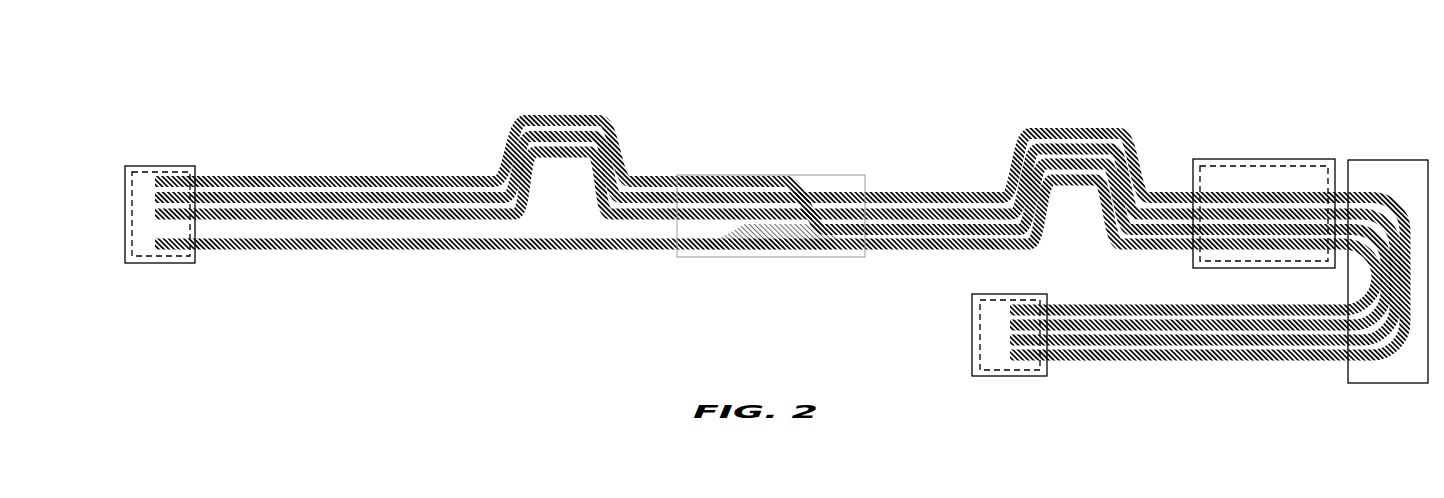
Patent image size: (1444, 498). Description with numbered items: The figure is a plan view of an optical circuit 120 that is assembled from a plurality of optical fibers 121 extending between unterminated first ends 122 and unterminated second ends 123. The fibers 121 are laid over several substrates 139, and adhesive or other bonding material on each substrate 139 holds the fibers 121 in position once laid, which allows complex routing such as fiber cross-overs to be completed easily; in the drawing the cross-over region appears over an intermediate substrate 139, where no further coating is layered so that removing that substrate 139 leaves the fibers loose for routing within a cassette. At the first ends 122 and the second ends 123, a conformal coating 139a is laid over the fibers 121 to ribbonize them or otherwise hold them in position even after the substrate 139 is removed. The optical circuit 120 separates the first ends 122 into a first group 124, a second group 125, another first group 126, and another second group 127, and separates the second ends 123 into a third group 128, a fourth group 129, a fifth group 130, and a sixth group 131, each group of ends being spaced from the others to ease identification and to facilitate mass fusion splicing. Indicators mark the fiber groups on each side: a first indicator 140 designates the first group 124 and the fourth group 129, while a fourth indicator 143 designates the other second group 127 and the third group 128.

The optical circuit 120 is at (776, 160).
The optical fibers 121 is at (1070, 128).
The first ends 122 is at (1008, 327).
The second ends 123 is at (157, 243).
The first group 124 is at (1010, 357).
The second group 125 is at (1010, 322).
The another first group 126 is at (1010, 340).
The another second group 127 is at (1010, 305).
The third group 128 is at (157, 243).
The fourth group 129 is at (157, 181).
The fifth group 130 is at (155, 200).
The sixth group 131 is at (155, 214).
The substrate 139 is at (142, 166).
The conformal coating 139a is at (172, 253).
The first indicator 140 is at (445, 178).
The fourth indicator 143 is at (445, 240).